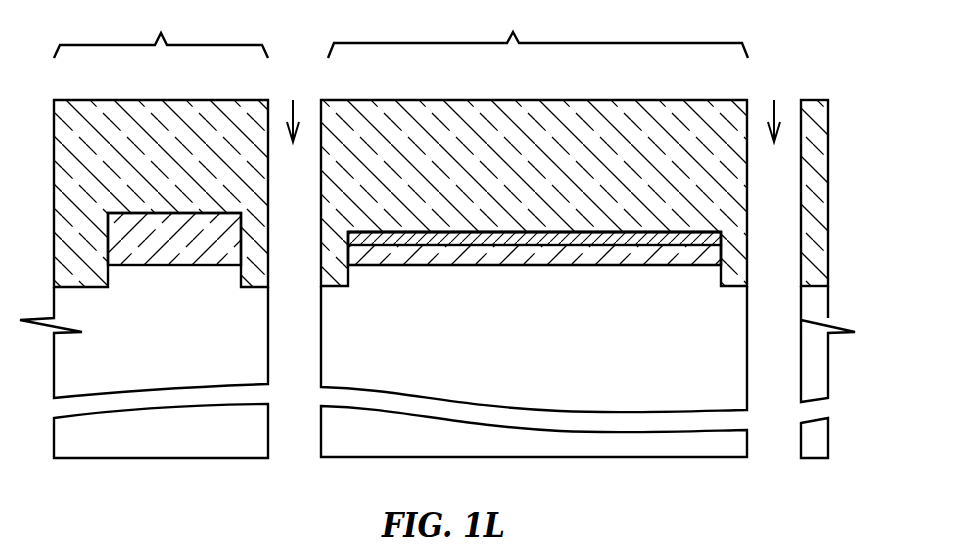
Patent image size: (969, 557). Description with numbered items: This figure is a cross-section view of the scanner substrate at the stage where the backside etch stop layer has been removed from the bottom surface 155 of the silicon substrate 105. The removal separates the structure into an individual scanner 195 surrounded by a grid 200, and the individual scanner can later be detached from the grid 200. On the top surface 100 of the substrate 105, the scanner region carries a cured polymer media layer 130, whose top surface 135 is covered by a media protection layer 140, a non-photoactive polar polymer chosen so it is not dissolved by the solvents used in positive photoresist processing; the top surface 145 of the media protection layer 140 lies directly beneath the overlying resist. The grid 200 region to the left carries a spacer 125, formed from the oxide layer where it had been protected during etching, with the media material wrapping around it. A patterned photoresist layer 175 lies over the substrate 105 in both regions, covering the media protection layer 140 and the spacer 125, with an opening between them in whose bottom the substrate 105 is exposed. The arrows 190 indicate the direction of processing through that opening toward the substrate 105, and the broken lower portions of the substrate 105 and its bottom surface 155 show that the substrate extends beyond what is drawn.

The top surface 100 is at (534, 279).
The silicon substrate 105 is at (102, 386).
The spacer 125 is at (175, 253).
The media layer 130 is at (702, 259).
The top surface 135 is at (573, 247).
The media protection layer 140 is at (640, 240).
The top surface 145 is at (500, 233).
The bottom surface 155 is at (200, 457).
The patterned photoresist layer 175 is at (137, 110).
The process direction arrow 190 is at (534, 108).
The individual scanners 195 is at (538, 32).
The grid 200 is at (161, 32).